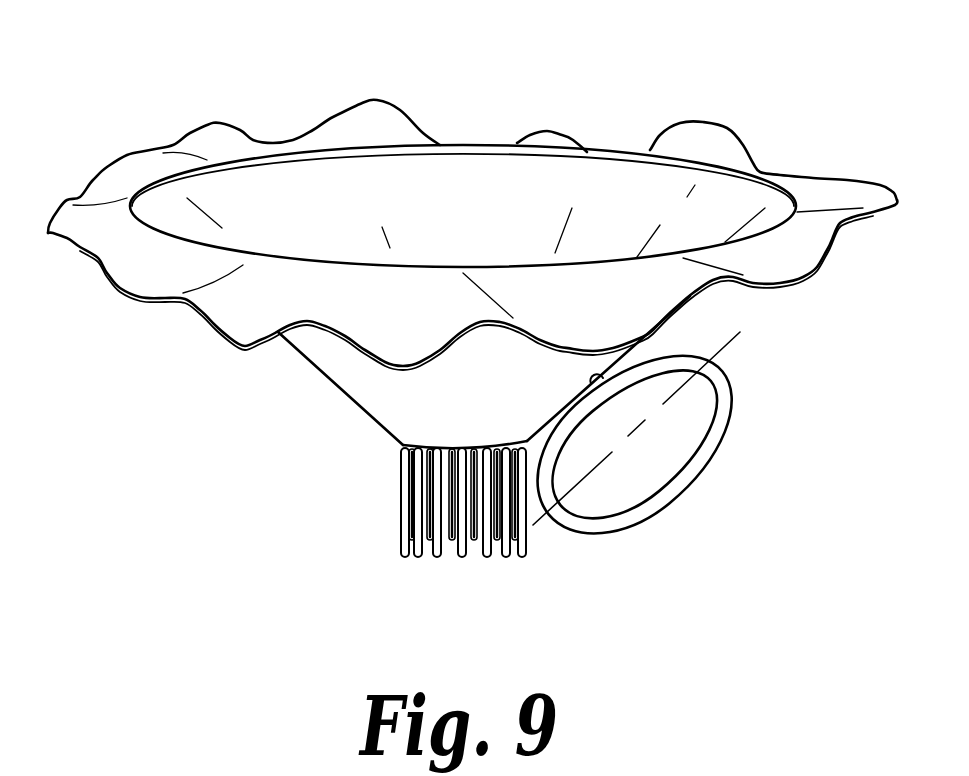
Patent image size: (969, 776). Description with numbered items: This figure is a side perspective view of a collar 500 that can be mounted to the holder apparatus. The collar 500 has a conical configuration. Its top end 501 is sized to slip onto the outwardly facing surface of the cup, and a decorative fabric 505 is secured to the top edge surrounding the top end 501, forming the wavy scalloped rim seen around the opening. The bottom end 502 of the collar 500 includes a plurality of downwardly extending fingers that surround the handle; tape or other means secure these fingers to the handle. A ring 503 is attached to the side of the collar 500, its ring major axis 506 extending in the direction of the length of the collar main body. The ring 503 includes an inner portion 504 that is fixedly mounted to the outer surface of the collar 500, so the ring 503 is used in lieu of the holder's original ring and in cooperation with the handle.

The collar 500 is at (357, 373).
The top end 501 is at (553, 200).
The bottom end 502 is at (400, 520).
The ring 503 is at (717, 438).
The inner portion 504 is at (592, 380).
The decorative fabric 505 is at (375, 125).
The ring major axis 506 is at (553, 508).